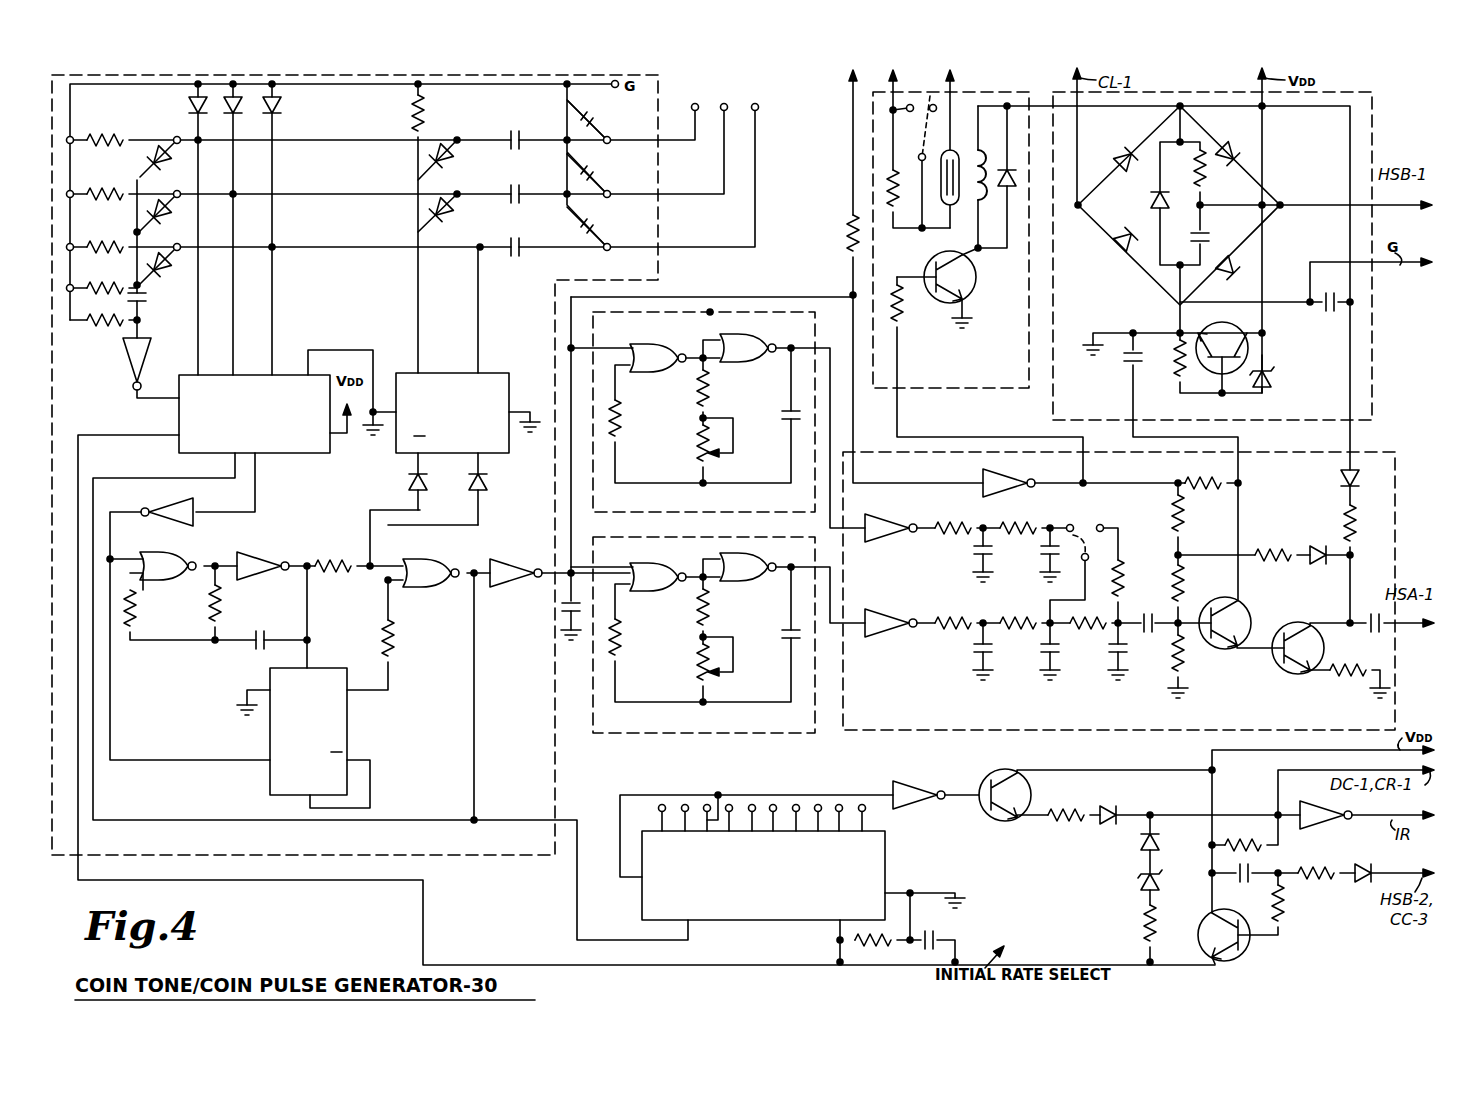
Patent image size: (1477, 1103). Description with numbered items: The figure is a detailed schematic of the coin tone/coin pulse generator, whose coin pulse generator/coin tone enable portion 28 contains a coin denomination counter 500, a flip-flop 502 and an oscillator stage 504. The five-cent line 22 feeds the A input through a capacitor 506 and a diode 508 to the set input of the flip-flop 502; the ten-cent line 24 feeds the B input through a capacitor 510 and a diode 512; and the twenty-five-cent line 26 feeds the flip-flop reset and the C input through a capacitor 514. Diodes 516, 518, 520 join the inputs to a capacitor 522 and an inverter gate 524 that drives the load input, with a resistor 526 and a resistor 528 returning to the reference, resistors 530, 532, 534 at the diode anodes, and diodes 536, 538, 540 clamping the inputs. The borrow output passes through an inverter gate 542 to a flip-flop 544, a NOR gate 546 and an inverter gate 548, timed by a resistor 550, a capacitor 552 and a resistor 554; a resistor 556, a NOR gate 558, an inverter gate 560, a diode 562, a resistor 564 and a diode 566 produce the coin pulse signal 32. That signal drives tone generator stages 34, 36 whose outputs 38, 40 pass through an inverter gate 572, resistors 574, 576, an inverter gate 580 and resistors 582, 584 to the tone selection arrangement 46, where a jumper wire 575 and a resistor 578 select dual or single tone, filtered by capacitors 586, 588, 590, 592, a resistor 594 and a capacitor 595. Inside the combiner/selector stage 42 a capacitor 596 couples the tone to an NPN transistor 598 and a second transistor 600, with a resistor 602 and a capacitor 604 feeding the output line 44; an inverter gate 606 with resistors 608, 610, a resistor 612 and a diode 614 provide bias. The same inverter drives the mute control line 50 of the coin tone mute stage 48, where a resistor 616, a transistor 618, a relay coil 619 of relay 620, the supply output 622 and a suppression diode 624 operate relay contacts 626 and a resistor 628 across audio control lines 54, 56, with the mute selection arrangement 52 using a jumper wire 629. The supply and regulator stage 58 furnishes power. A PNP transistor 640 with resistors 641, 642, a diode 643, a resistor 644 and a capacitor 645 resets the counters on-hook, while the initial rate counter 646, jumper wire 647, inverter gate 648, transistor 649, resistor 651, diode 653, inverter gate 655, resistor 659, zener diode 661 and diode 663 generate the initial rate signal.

The 5 cent annunciator coin signal line 22 is at (695, 103).
The 10 cent denomination coin signal line 24 is at (724, 103).
The 25 cent coin denomination signal line 26 is at (755, 103).
The coin pulse generator / coin tone enable 28 is at (462, 860).
The coin pulse signal line 32 is at (850, 78).
The tone generator stage 34 is at (710, 308).
The tone generator stage 36 is at (590, 712).
The output of tone generator stage 34 38 is at (830, 350).
The output of tone generator stage 36 40 is at (845, 628).
The coin tone combiner/selector stage 42 is at (1400, 478).
The coin tone output line 44 is at (1420, 620).
The tone selection arrangement 46 is at (1078, 512).
The coin tone mute stage 48 is at (972, 392).
The coin tone mute control line 50 is at (1020, 436).
The coin tone mute selection arrangement 52 is at (927, 100).
The coin tone mute audio control line 54 is at (892, 104).
The coin tone mute audio control line 56 is at (952, 74).
The supply and regulator stage 58 is at (1376, 135).
The coin denomination counter 500 is at (180, 452).
The flip-flop 502 is at (402, 372).
The oscillator stage 504 is at (190, 717).
The capacitor 506 is at (522, 128).
The diode 508 is at (436, 168).
The capacitor 510 is at (520, 184).
The diode 512 is at (436, 218).
The capacitor 514 is at (520, 238).
The diode 516 is at (160, 162).
The diode 518 is at (155, 215).
The diode 520 is at (157, 268).
The capacitor 522 is at (148, 300).
The inverter gate 524 is at (125, 355).
The resistor 526 is at (104, 328).
The resistor 528 is at (112, 284).
The resistor 530 is at (112, 136).
The resistor 532 is at (112, 190).
The resistor 534 is at (112, 243).
The diode 536 is at (190, 108).
The diode 538 is at (240, 100).
The diode 540 is at (278, 110).
The inverter gate 542 is at (165, 508).
The flip-flop 544 is at (350, 737).
The two-input NOR gate 546 is at (168, 560).
The inverter gate 548 is at (248, 552).
The resistor 550 is at (136, 612).
The capacitor 552 is at (252, 648).
The resistor 554 is at (228, 612).
The resistor 556 is at (395, 640).
The two-input NOR gate 558 is at (450, 588).
The inverter gate 560 is at (525, 585).
The diode 562 is at (482, 482).
The resistor 564 is at (348, 558).
The diode 566 is at (410, 484).
The inverter gate 572 is at (868, 516).
The resistor 574 is at (962, 524).
The jumper wire 575 is at (1104, 524).
The resistor 576 is at (1000, 522).
The resistor 578 is at (1122, 552).
The inverter gate 580 is at (890, 608).
The resistor 582 is at (948, 616).
The resistor 584 is at (1012, 617).
The capacitor 586 is at (978, 645).
The capacitor 588 is at (1046, 648).
The capacitor 590 is at (975, 545).
The capacitor 592 is at (1045, 548).
The resistor 594 is at (1085, 618).
The capacitor 595 is at (1114, 648).
The capacitor 596 is at (1148, 635).
The NPN transistor 598 is at (1240, 605).
The second NPN transistor 600 is at (1280, 628).
The resistor 602 is at (1355, 668).
The capacitor 604 is at (1385, 635).
The inverter gate 606 is at (980, 478).
The resistor 608 is at (1182, 518).
The resistor 610 is at (1182, 595).
The resistor 612 is at (1290, 550).
The diode 614 is at (1318, 547).
The resistor 616 is at (900, 305).
The NPN mute control transistor 618 is at (968, 282).
The relay coil 619 is at (982, 235).
The relay 620 is at (940, 230).
The supply output 622 is at (1355, 303).
The suppression diode 624 is at (1012, 168).
The relay contacts 626 is at (940, 170).
The resistor 628 is at (890, 190).
The jumper wire 629 is at (922, 140).
The PNP transistor 640 is at (1248, 942).
The resistor 641 is at (1285, 925).
The resistor 642 is at (1320, 878).
The diode 643 is at (1368, 882).
The resistor 644 is at (1245, 838).
The capacitor 645 is at (1240, 870).
The initial rate counter 646 is at (790, 922).
The initial rate select jumper wire 647 is at (712, 800).
The inverter gate 648 is at (915, 790).
The PNP transistor 649 is at (1005, 812).
The resistor 651 is at (1058, 825).
The diode 653 is at (1104, 808).
The inverter gate 655 is at (1338, 825).
The resistor 659 is at (1142, 928).
The zener diode 661 is at (1138, 882).
The diode 663 is at (1140, 843).